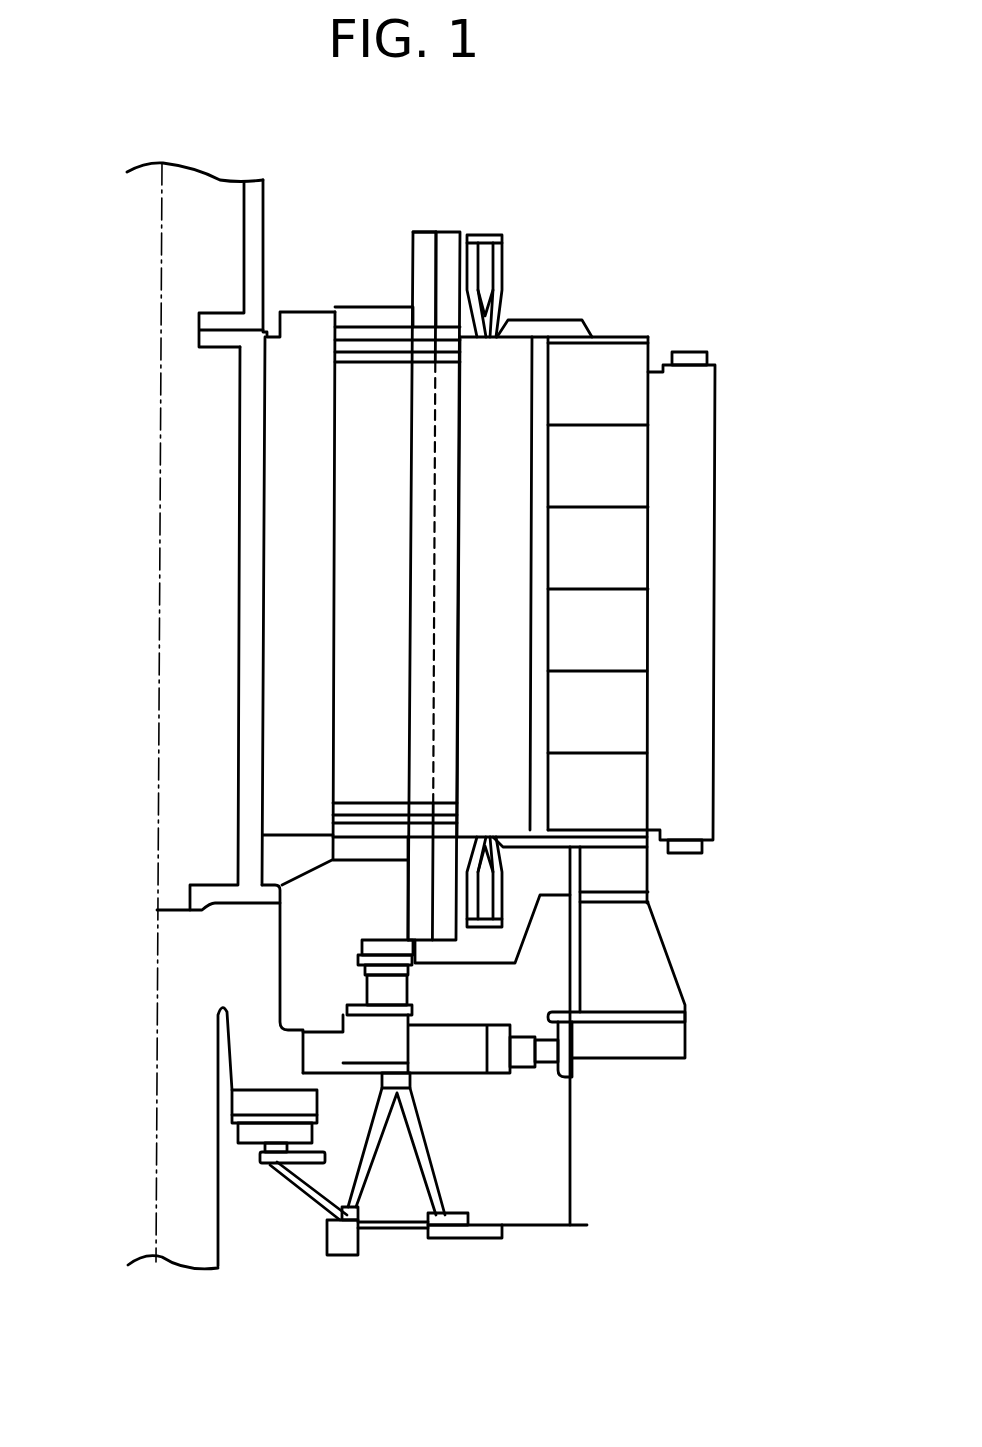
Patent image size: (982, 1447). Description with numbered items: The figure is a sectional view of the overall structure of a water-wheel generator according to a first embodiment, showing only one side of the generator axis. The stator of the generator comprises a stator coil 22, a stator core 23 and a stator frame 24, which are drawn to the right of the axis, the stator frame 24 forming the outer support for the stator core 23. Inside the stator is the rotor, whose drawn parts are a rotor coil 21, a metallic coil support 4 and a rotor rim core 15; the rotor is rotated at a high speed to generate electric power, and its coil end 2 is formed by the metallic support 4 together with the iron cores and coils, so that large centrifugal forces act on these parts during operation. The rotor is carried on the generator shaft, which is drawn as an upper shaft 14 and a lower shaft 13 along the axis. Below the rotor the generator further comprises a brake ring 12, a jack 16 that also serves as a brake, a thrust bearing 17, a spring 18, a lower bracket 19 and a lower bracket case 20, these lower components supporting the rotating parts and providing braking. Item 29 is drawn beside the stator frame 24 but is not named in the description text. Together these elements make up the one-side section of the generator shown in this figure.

The coil end 2 is at (437, 222).
The metallic support 4 is at (424, 268).
The brake ring 12 is at (358, 953).
The lower shaft 13 is at (185, 1026).
The upper shaft 14 is at (190, 235).
The rotor rim core 15 is at (360, 722).
The jack 16 is at (398, 987).
The thrust bearing 17 is at (258, 1102).
The spring 18 is at (255, 1140).
The lower bracket 19 is at (392, 1207).
The lower bracket case 20 is at (468, 1240).
The rotor coil 21 is at (450, 397).
The stator coil 22 is at (502, 263).
The stator core 23 is at (517, 650).
The stator frame 24 is at (648, 472).
The outer cover 29 is at (715, 557).